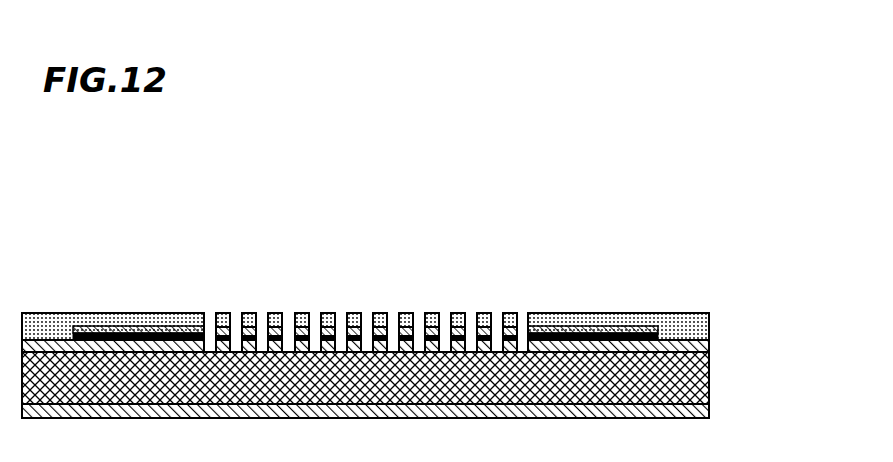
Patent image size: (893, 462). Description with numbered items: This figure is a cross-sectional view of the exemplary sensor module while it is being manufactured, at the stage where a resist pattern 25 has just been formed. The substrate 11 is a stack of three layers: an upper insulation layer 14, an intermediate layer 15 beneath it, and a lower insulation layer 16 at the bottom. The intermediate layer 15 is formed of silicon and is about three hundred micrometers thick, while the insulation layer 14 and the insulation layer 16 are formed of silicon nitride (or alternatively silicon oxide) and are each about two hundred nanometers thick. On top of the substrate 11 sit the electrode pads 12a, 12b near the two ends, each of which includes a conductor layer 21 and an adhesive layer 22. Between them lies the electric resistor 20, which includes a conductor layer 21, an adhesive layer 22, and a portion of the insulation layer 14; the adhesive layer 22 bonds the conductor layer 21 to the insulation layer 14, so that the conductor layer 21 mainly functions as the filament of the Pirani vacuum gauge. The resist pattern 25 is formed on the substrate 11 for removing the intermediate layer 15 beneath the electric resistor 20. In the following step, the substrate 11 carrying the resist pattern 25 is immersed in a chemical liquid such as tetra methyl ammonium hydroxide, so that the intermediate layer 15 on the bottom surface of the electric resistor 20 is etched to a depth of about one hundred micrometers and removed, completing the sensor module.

The substrate 11 is at (414, 335).
The electrode pad 12a is at (680, 260).
The electrode pad 12b is at (128, 258).
The insulation layer 14 is at (391, 302).
The intermediate layer 15 is at (713, 373).
The insulation layer 16 is at (713, 410).
The electric resistor 20 is at (307, 258).
The conductor layer 21 is at (103, 326).
The adhesive layer 22 is at (67, 334).
The resist pattern 25 is at (381, 313).